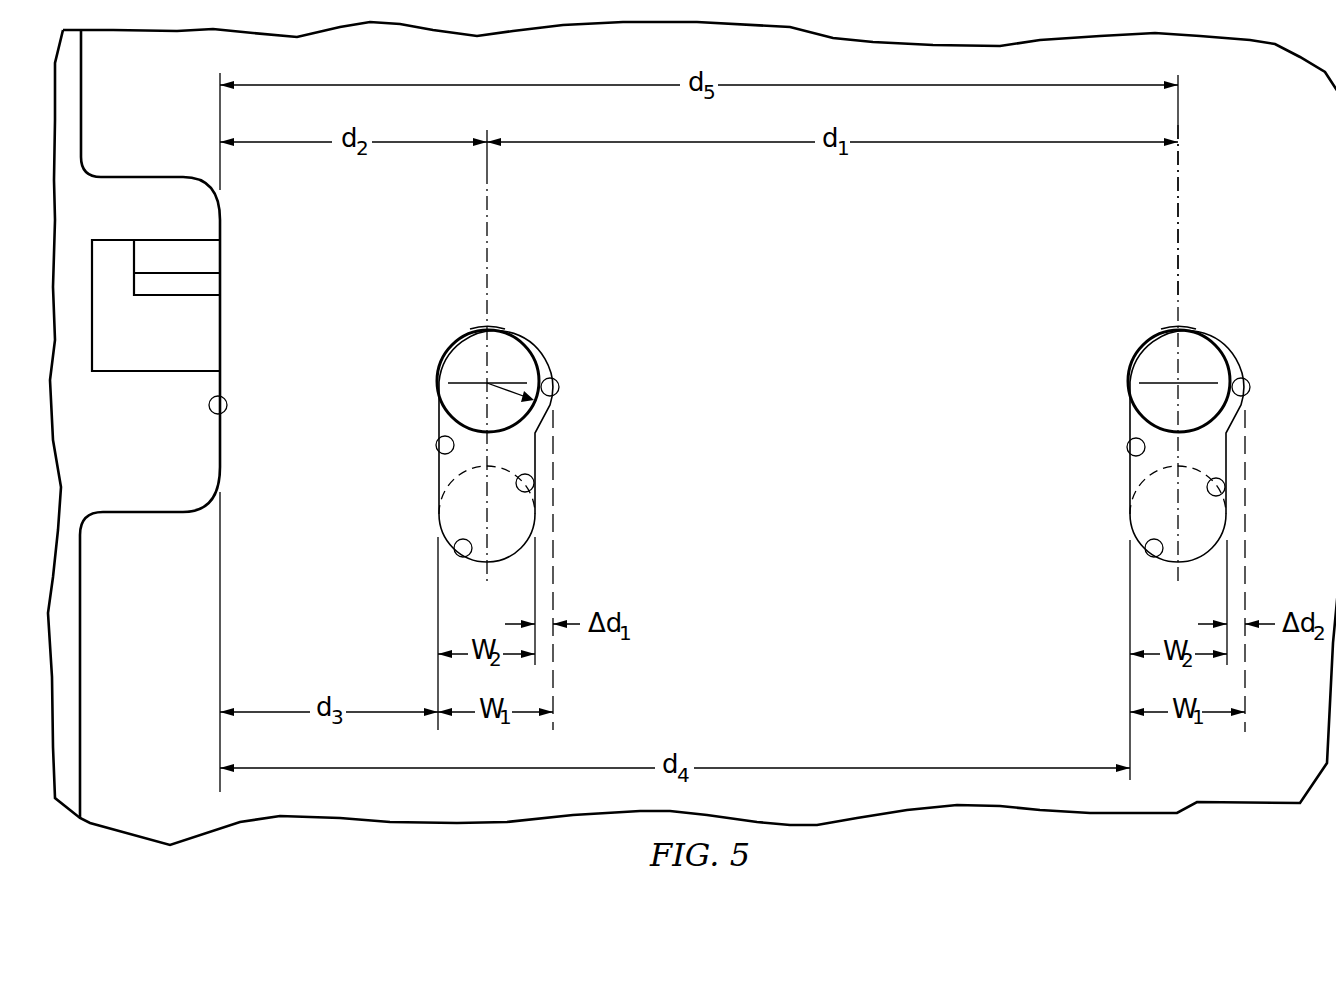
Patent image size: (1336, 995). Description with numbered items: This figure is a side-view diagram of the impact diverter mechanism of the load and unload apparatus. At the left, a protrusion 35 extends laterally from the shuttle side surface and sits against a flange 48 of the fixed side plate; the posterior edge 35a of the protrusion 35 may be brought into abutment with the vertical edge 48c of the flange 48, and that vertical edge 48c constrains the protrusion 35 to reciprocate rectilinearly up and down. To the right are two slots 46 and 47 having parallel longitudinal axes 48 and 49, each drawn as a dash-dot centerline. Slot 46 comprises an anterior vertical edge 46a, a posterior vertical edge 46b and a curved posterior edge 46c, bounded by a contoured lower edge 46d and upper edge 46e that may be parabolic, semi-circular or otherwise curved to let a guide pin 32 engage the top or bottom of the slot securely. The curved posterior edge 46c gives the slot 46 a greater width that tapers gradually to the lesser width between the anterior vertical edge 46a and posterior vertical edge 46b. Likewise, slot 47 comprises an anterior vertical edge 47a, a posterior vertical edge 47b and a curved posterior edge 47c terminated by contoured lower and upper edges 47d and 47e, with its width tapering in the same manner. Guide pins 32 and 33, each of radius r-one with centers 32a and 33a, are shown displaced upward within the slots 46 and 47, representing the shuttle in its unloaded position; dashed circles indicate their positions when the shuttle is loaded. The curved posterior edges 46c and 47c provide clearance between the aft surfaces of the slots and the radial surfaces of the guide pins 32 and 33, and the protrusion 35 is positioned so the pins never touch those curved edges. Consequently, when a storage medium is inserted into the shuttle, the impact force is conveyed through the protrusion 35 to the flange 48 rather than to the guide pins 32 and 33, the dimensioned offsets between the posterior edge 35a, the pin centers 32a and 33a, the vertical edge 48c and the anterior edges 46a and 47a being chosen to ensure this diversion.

The flange 48 is at (147, 520).
The vertical edge 48c is at (228, 409).
The longitudinal axis 49 is at (1180, 185).
The protrusion 35 is at (176, 298).
The posterior edge 35a is at (220, 258).
The guide pin 32 is at (504, 355).
The guide pin center 32a is at (485, 378).
The slot 46 is at (546, 336).
The anterior vertical edge 46a is at (437, 447).
The posterior vertical edge 46b is at (533, 488).
The curved posterior edge 46c is at (558, 390).
The lower edge 46d is at (465, 556).
The upper edge 46e is at (482, 328).
The guide pin 33 is at (1179, 354).
The guide pin center 33a is at (1136, 344).
The slot 47 is at (1208, 426).
The anterior vertical edge 47a is at (1098, 447).
The posterior vertical edge 47b is at (1259, 486).
The curved posterior edge 47c is at (1278, 393).
The lower edge 47d is at (1162, 580).
The upper edge 47e is at (1158, 303).